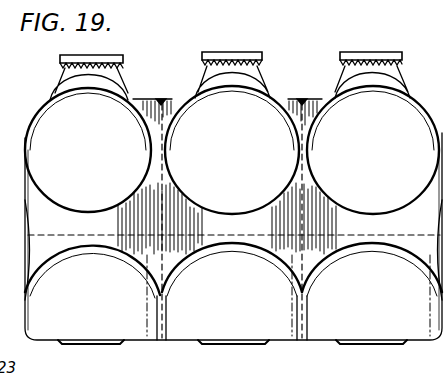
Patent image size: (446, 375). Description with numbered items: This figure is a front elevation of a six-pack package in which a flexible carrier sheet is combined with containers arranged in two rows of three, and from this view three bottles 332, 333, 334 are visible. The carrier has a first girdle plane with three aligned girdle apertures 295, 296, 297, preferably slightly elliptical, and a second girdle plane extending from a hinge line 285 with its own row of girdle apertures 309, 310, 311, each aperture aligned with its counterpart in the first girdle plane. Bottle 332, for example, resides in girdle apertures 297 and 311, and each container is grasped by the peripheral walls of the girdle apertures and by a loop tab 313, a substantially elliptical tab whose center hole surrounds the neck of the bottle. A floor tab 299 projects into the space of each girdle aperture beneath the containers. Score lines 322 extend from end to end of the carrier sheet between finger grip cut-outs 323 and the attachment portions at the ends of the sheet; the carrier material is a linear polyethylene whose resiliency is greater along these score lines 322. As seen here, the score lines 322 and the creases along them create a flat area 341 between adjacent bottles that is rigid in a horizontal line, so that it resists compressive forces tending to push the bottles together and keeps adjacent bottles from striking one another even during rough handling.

The hinge line 285 is at (273, 240).
The girdle aperture 295 is at (333, 256).
The girdle aperture 296 is at (198, 258).
The girdle aperture 297 is at (37, 273).
The floor tab 299 is at (96, 344).
The girdle aperture 309 is at (330, 197).
The girdle aperture 310 is at (278, 192).
The girdle aperture 311 is at (45, 195).
The loop tab 313 is at (100, 82).
The score lines 322 is at (140, 215).
The finger grip cut-outs 323 is at (160, 99).
The bottle 332 is at (118, 56).
The bottle 333 is at (233, 52).
The bottle 334 is at (370, 52).
The flat area 341 is at (172, 210).